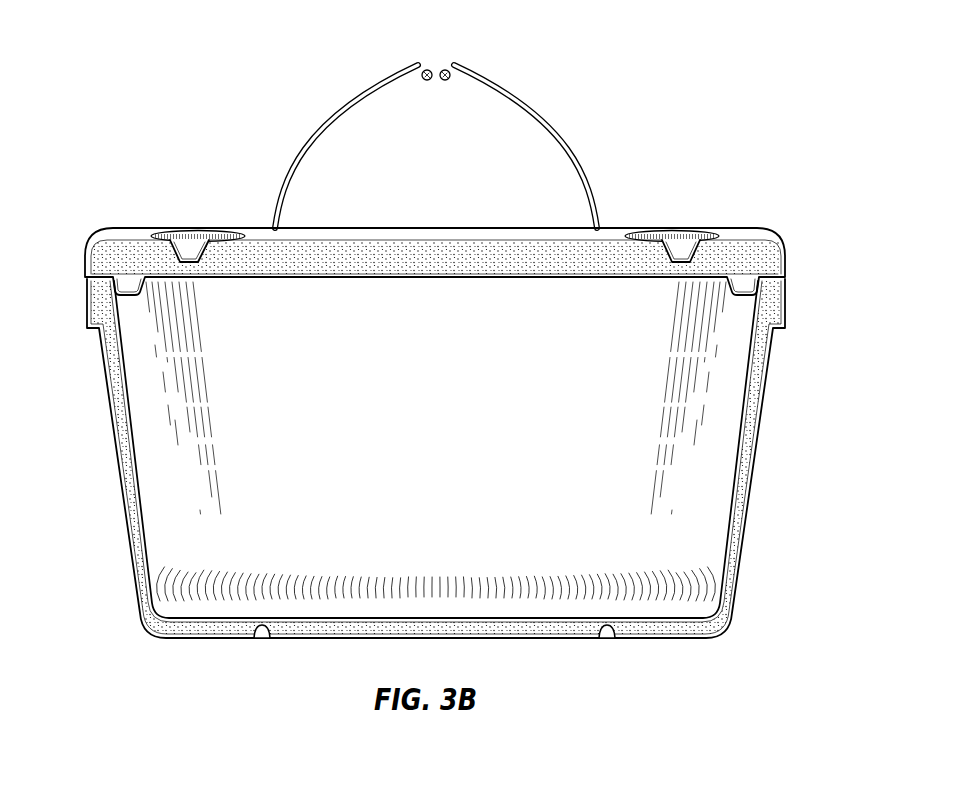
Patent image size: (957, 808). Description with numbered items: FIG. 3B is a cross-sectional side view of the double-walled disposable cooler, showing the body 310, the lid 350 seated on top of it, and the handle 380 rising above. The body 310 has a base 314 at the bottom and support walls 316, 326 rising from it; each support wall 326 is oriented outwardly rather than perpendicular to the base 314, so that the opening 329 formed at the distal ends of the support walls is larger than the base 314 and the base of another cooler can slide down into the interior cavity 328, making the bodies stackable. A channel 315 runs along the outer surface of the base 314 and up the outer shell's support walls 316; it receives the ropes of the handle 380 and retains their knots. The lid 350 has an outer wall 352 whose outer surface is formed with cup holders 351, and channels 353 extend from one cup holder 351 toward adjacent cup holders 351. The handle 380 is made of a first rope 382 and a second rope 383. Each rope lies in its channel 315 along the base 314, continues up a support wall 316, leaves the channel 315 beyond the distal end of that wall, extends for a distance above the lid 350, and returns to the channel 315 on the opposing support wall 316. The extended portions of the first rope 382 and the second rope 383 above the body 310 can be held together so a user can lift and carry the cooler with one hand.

The body 310 is at (467, 493).
The base 314 is at (562, 638).
The channel 315 is at (263, 638).
The outer shell's support wall 316 is at (754, 448).
The support wall 326 is at (722, 508).
The interior cavity 328 is at (233, 480).
The opening 329 is at (182, 287).
The lid 350 is at (476, 229).
The cup holder 351 is at (677, 250).
The lid's outer wall 352 is at (444, 241).
The channel 353 is at (196, 250).
The handle 380 is at (440, 125).
The first rope 382 is at (518, 110).
The second rope 383 is at (358, 102).